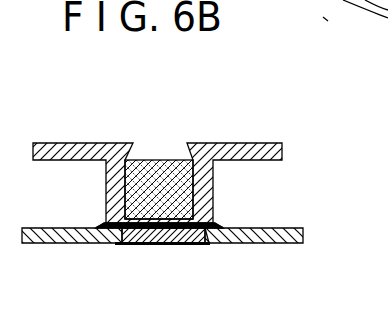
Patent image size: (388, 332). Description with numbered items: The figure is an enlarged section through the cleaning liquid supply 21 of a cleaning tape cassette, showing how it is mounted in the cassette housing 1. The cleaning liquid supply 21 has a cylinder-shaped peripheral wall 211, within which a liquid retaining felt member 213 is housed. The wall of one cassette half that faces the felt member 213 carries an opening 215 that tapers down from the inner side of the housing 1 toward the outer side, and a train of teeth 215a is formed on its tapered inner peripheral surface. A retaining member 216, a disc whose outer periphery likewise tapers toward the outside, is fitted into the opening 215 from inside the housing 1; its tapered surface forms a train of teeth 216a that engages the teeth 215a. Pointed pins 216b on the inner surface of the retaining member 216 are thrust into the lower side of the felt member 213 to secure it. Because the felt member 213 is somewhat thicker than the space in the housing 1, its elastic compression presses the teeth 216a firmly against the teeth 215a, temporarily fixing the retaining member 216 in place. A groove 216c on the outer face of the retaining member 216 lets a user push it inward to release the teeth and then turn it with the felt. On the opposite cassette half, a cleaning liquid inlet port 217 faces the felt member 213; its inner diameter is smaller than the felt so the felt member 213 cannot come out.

The housing 1 is at (57, 243).
The cleaning liquid supply 21 is at (222, 201).
The peripheral wall 211 is at (113, 183).
The felt member 213 is at (188, 177).
The opening 215 is at (188, 243).
The train of teeth 215a is at (210, 243).
The retaining member 216 is at (125, 243).
The train of teeth 216a is at (203, 225).
The pointed pins 216b is at (112, 220).
The groove 216c is at (152, 243).
The cleaning liquid inlet port 217 is at (178, 148).